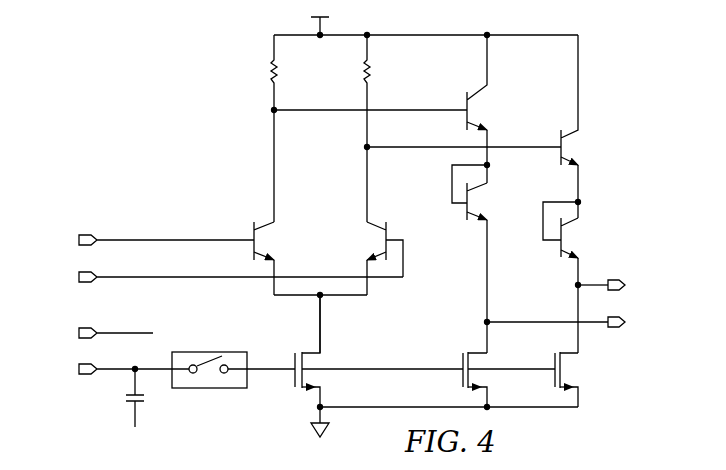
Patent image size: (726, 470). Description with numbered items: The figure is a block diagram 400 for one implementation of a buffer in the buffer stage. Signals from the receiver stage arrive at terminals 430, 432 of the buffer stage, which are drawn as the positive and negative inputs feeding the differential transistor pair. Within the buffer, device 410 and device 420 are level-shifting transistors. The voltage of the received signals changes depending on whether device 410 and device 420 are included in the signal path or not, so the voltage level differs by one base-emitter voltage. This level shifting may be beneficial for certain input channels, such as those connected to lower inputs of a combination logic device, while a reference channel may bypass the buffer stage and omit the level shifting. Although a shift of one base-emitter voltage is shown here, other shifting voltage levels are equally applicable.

The block diagram 400 is at (125, 65).
The device 410 is at (466, 207).
The device 420 is at (560, 245).
The terminal 430 is at (127, 240).
The terminal 432 is at (147, 277).